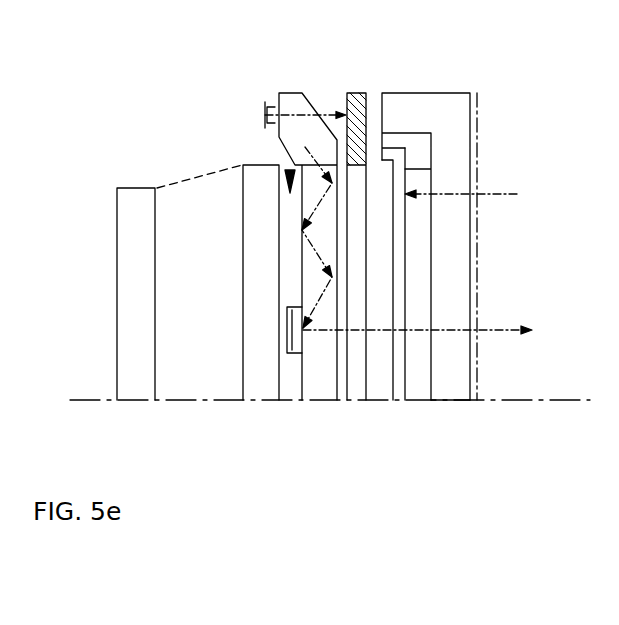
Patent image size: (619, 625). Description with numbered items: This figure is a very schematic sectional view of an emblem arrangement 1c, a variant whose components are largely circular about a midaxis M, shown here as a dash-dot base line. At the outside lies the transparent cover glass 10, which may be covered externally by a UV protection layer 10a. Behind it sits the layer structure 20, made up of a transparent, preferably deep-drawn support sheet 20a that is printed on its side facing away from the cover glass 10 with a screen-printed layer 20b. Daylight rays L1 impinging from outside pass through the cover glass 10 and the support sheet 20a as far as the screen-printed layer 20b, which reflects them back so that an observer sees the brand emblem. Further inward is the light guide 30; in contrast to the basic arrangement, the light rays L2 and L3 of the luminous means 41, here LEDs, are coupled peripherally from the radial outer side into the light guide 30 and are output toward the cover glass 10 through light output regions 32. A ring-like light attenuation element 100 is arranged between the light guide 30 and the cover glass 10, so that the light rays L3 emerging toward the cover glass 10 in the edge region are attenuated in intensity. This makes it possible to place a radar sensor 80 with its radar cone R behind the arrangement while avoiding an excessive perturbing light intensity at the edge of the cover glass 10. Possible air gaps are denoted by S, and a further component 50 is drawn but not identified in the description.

The emblem arrangement 1c is at (507, 123).
The cover glass 10 is at (454, 394).
The UV protection layer 10a is at (478, 367).
The layer structure 20 is at (414, 160).
The transparent support sheet 20a is at (419, 394).
The screen-printed layer 20b is at (400, 394).
The light guide 30 is at (323, 394).
The light output regions 32 is at (295, 342).
The luminous means (LEDs) 41 is at (263, 112).
The light receiving element 50 is at (257, 394).
The radar sensor 80 is at (135, 394).
The light attenuation element 100 is at (358, 104).
The light rays L1 is at (505, 193).
The light rays L2 is at (305, 146).
The light rays L3 is at (328, 114).
The midaxis M is at (547, 401).
The radar cone R is at (199, 176).
The air gaps S is at (290, 168).